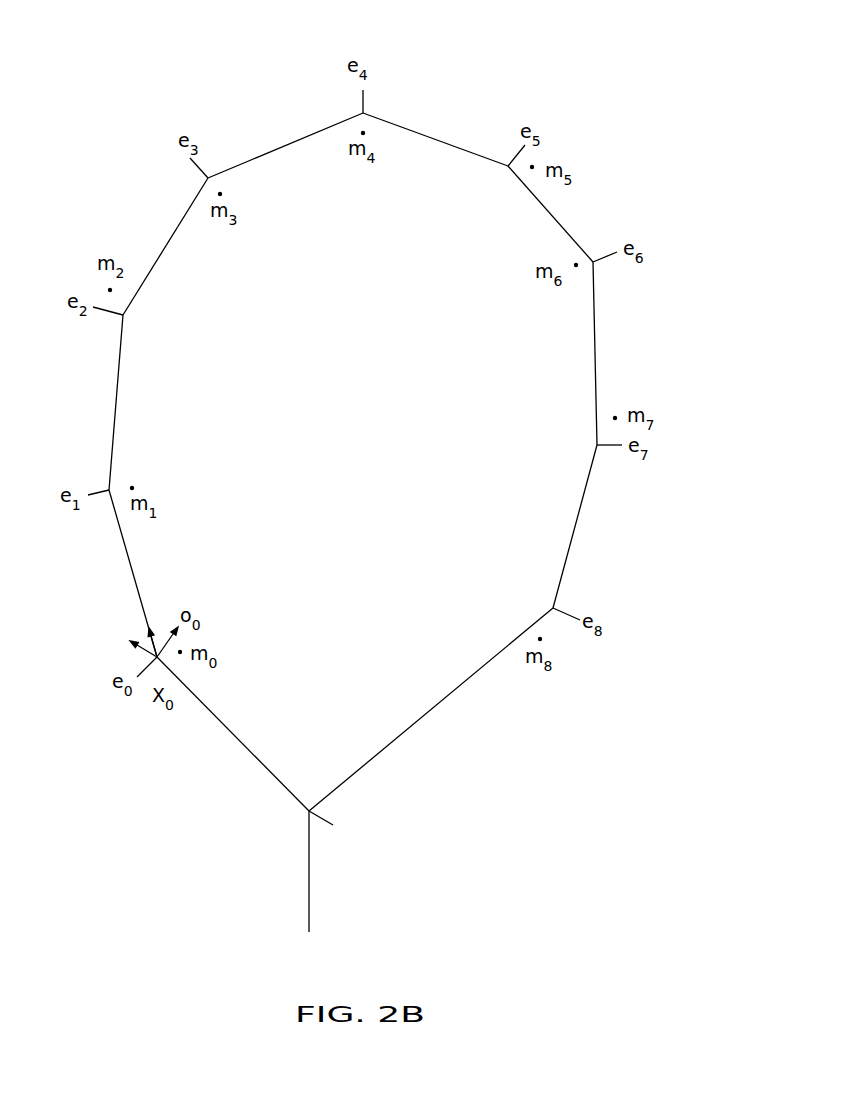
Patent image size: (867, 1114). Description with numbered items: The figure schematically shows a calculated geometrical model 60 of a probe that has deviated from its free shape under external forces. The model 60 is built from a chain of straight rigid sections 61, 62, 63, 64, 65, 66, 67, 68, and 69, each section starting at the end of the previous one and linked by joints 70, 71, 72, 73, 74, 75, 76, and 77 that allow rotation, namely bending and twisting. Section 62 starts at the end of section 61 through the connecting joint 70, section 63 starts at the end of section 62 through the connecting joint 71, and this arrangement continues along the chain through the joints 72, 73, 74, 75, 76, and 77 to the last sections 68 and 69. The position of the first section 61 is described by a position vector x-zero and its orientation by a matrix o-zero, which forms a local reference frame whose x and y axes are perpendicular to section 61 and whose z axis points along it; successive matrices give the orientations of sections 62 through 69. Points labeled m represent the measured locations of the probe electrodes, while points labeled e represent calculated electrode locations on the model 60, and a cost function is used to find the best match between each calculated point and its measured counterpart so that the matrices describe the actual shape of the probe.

The calculated geometrical model 60 is at (615, 38).
The straight rigid section 61 is at (134, 587).
The straight rigid section 62 is at (117, 403).
The straight rigid section 63 is at (163, 258).
The straight rigid section 64 is at (285, 148).
The straight rigid section 65 is at (433, 140).
The straight rigid section 66 is at (545, 208).
The straight rigid section 67 is at (595, 352).
The straight rigid section 68 is at (582, 520).
The straight rigid section 69 is at (432, 710).
The joint 70 is at (110, 483).
The joint 71 is at (123, 315).
The joint 72 is at (208, 178).
The joint 73 is at (365, 112).
The joint 74 is at (508, 166).
The joint 75 is at (593, 262).
The joint 76 is at (597, 445).
The joint 77 is at (553, 608).